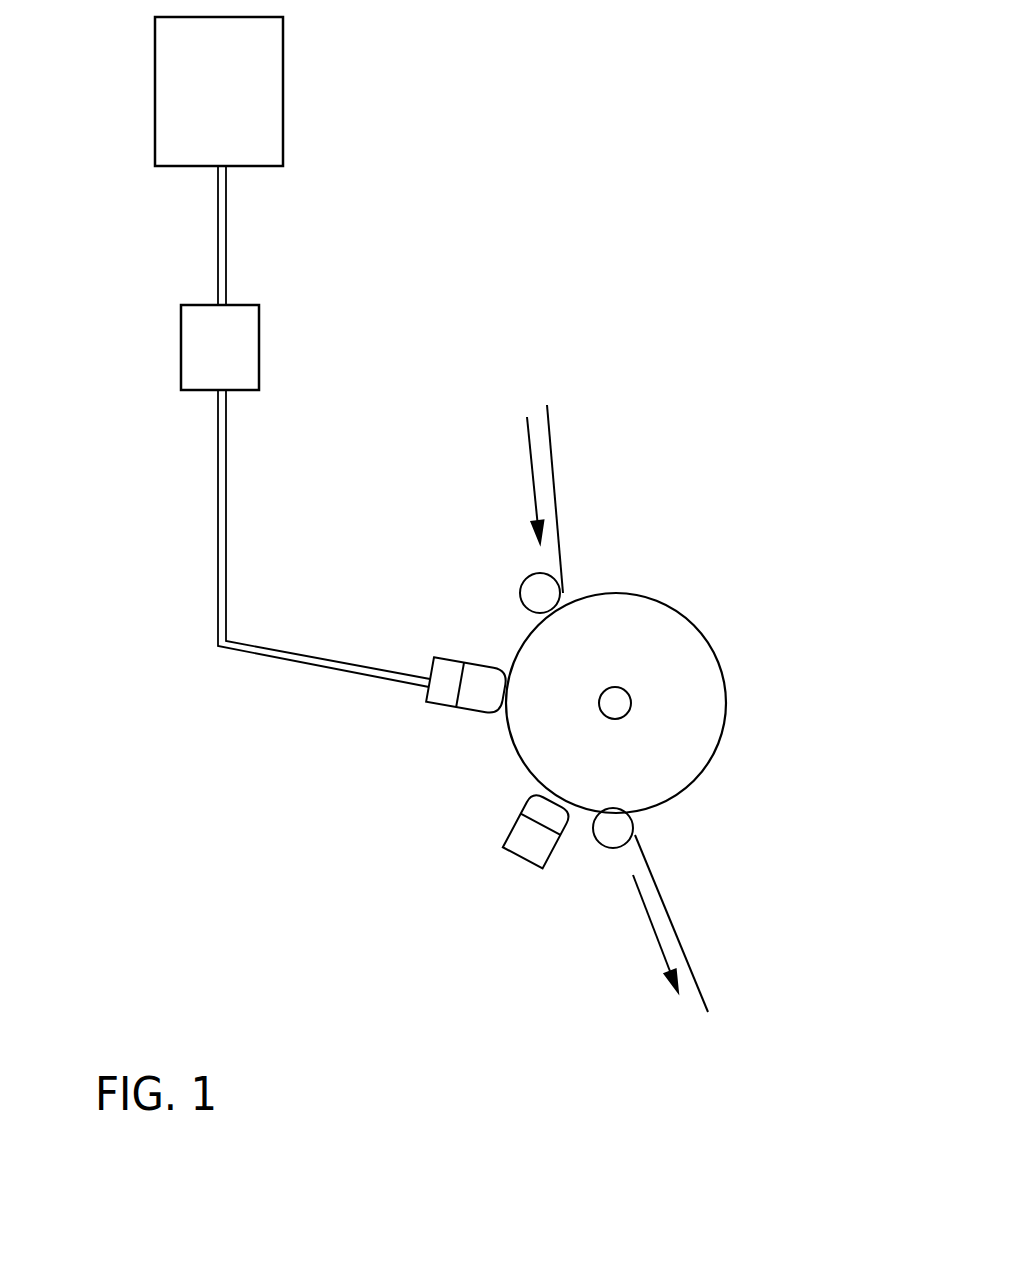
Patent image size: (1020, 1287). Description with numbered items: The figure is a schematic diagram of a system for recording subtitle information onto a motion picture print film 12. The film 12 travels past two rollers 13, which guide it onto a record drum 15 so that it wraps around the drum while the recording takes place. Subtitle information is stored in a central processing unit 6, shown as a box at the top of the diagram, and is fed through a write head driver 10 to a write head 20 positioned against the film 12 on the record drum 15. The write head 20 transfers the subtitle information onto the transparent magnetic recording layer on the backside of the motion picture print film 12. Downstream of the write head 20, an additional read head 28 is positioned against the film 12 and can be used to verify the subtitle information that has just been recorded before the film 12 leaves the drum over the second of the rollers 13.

The central processing unit 6 is at (155, 140).
The write head driver 10 is at (181, 377).
The motion picture print film 12 is at (553, 467).
The rollers 13 is at (520, 600).
The record drum 15 is at (675, 608).
The write head 20 is at (480, 715).
The read head 28 is at (519, 815).